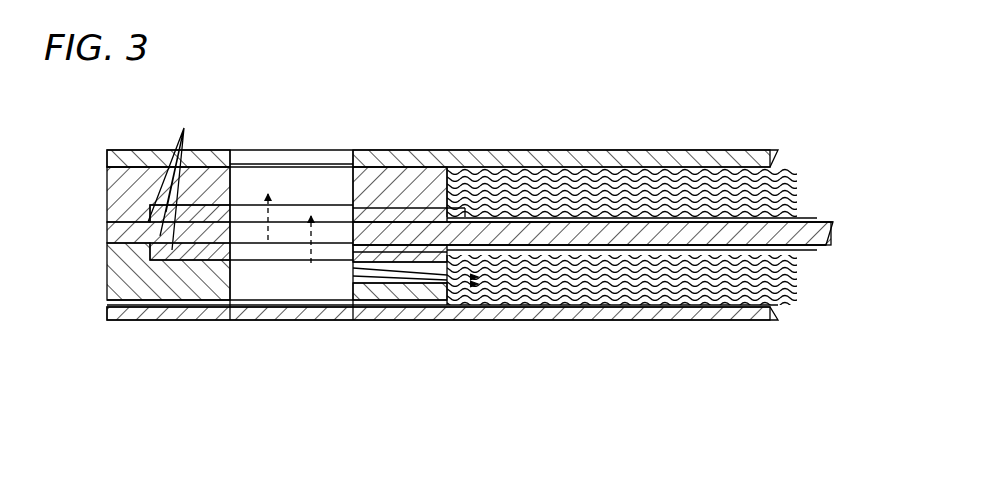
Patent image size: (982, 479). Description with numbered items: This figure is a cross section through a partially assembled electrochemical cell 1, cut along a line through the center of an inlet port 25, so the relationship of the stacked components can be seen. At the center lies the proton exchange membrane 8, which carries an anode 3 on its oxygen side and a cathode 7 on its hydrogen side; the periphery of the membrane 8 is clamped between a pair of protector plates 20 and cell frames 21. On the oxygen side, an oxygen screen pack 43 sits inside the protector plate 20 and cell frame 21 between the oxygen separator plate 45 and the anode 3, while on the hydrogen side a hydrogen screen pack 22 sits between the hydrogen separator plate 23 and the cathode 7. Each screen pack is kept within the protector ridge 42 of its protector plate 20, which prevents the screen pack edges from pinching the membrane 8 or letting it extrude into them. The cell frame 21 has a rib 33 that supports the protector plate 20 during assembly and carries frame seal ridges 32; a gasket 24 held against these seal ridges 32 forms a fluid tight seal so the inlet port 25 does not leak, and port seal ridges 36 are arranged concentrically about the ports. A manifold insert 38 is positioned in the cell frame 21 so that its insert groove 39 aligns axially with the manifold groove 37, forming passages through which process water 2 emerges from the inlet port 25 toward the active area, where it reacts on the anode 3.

The cell 1 is at (90, 130).
The process water 2 is at (311, 190).
The anode 3 is at (815, 250).
The cathode 7 is at (815, 221).
The proton exchange membrane 8 is at (834, 235).
The protector plate 20 is at (394, 208).
The cell frame 21 is at (107, 184).
The hydrogen screen pack 22 is at (797, 192).
The hydrogen separator plate 23 is at (778, 156).
The gasket 24 is at (107, 302).
The inlet port 25 is at (248, 290).
The frame seal ridge 32 is at (86, 231).
The rib 33 is at (122, 215).
The port seal ridge 36 is at (176, 176).
The manifold groove 37 is at (400, 288).
The manifold insert 38 is at (412, 292).
The insert groove 39 is at (380, 284).
The protector ridge 42 is at (456, 172).
The oxygen screen pack 43 is at (797, 284).
The oxygen separator plate 45 is at (778, 318).